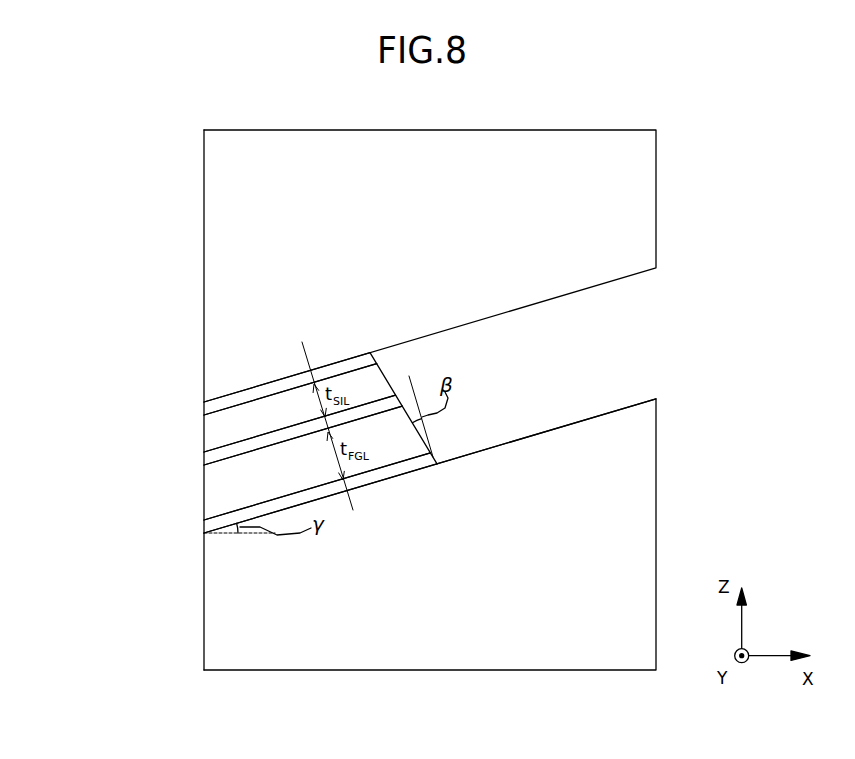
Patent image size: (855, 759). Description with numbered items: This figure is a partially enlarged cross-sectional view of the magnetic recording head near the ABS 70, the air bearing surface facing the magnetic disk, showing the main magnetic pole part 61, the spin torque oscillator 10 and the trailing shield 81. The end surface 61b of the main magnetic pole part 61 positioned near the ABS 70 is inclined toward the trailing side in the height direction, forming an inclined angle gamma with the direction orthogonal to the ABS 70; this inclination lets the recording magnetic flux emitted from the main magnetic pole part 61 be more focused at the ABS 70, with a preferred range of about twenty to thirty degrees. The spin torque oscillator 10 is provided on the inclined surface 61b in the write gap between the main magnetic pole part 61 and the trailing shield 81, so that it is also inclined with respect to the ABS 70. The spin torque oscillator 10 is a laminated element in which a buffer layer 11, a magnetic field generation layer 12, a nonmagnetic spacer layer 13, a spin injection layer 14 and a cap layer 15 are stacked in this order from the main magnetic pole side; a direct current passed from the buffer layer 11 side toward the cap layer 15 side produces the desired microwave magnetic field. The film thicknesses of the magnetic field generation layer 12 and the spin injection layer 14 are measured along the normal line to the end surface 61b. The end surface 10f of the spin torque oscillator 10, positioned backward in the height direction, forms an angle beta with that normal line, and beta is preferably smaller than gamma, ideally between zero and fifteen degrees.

The spin torque oscillator 10 is at (230, 454).
The buffer layer 11 is at (255, 504).
The magnetic field generation layer 12 is at (251, 463).
The nonmagnetic spacer layer 13 is at (237, 439).
The spin injection layer 14 is at (234, 408).
The cap layer 15 is at (225, 384).
The end surface of the spin torque oscillator 10f is at (469, 398).
The main magnetic pole part 61 is at (394, 539).
The end surface (inclined surface) of the main magnetic pole part 61b is at (546, 430).
The ABS 70 is at (134, 400).
The trailing shield 81 is at (363, 266).